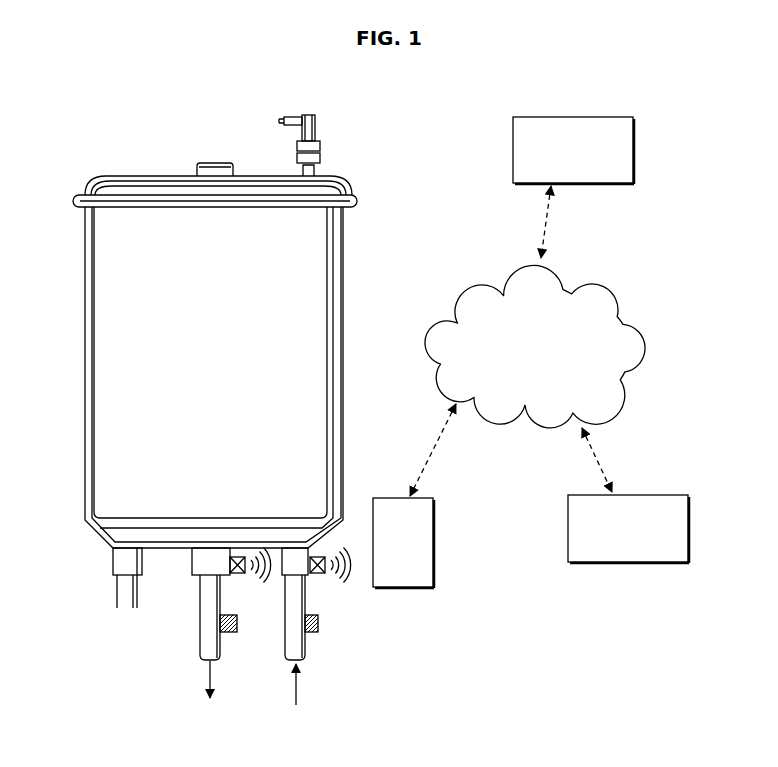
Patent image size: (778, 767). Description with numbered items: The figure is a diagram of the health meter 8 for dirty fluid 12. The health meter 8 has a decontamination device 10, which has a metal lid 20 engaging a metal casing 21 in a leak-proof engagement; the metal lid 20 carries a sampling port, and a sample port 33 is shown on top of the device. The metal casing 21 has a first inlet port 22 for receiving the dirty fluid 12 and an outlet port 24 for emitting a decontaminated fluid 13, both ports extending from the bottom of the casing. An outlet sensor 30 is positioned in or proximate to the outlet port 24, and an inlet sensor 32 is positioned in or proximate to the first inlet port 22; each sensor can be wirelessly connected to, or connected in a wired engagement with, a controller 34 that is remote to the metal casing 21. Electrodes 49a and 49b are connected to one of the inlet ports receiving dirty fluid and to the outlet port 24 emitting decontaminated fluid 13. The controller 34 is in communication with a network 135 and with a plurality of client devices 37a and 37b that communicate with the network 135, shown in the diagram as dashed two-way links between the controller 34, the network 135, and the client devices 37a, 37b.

The health meter 8 is at (543, 336).
The decontamination device 10 is at (261, 436).
The metal lid 20 is at (148, 177).
The metal casing 21 is at (318, 265).
The sample port 33 is at (318, 122).
The outlet port 24 is at (208, 626).
The first inlet port 22 is at (302, 632).
The outlet sensor 30 is at (233, 573).
The inlet sensor 32 is at (315, 573).
The electrode 49a is at (318, 622).
The electrode 49b is at (229, 635).
The decontaminated fluid 13 is at (208, 683).
The dirty fluid 12 is at (300, 690).
The network 135 is at (529, 376).
The controller 34 is at (393, 553).
The client device 37a is at (606, 117).
The client device 37b is at (652, 563).